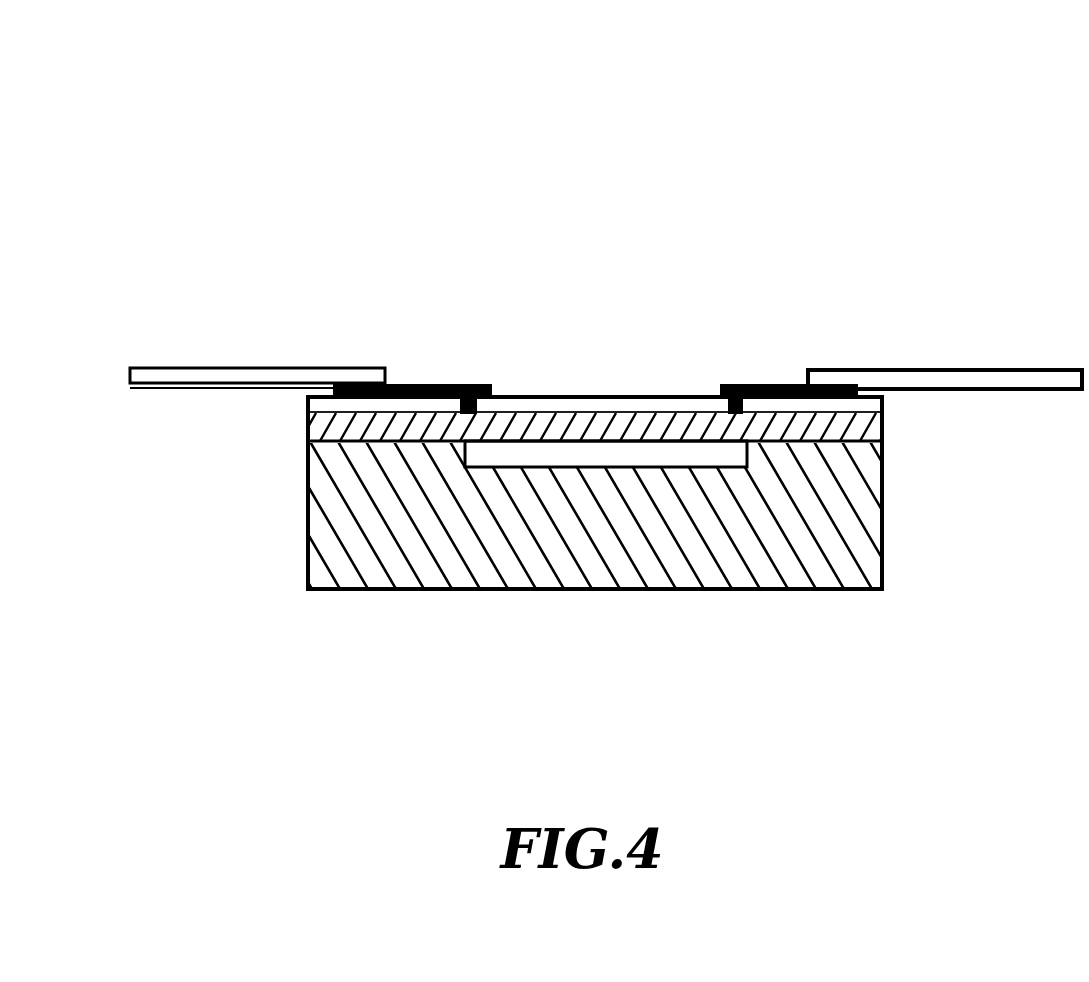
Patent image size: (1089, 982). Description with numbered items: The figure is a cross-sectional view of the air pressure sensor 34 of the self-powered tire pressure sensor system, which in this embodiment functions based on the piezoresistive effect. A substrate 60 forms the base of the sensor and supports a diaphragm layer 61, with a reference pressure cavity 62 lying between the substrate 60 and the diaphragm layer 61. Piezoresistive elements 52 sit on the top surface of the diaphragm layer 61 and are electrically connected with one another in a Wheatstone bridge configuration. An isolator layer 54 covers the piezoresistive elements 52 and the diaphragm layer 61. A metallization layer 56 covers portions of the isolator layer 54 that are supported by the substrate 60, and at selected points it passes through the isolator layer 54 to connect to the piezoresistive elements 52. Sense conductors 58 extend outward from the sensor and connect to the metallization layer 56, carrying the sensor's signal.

The air pressure sensor 34 is at (922, 128).
The piezoresistive elements 52 is at (733, 416).
The isolator layer 54 is at (605, 407).
The metallization layer 56 is at (415, 383).
The sense conductors 58 is at (232, 375).
The substrate 60 is at (835, 543).
The diaphragm layer 61 is at (863, 428).
The reference pressure cavity 62 is at (575, 472).